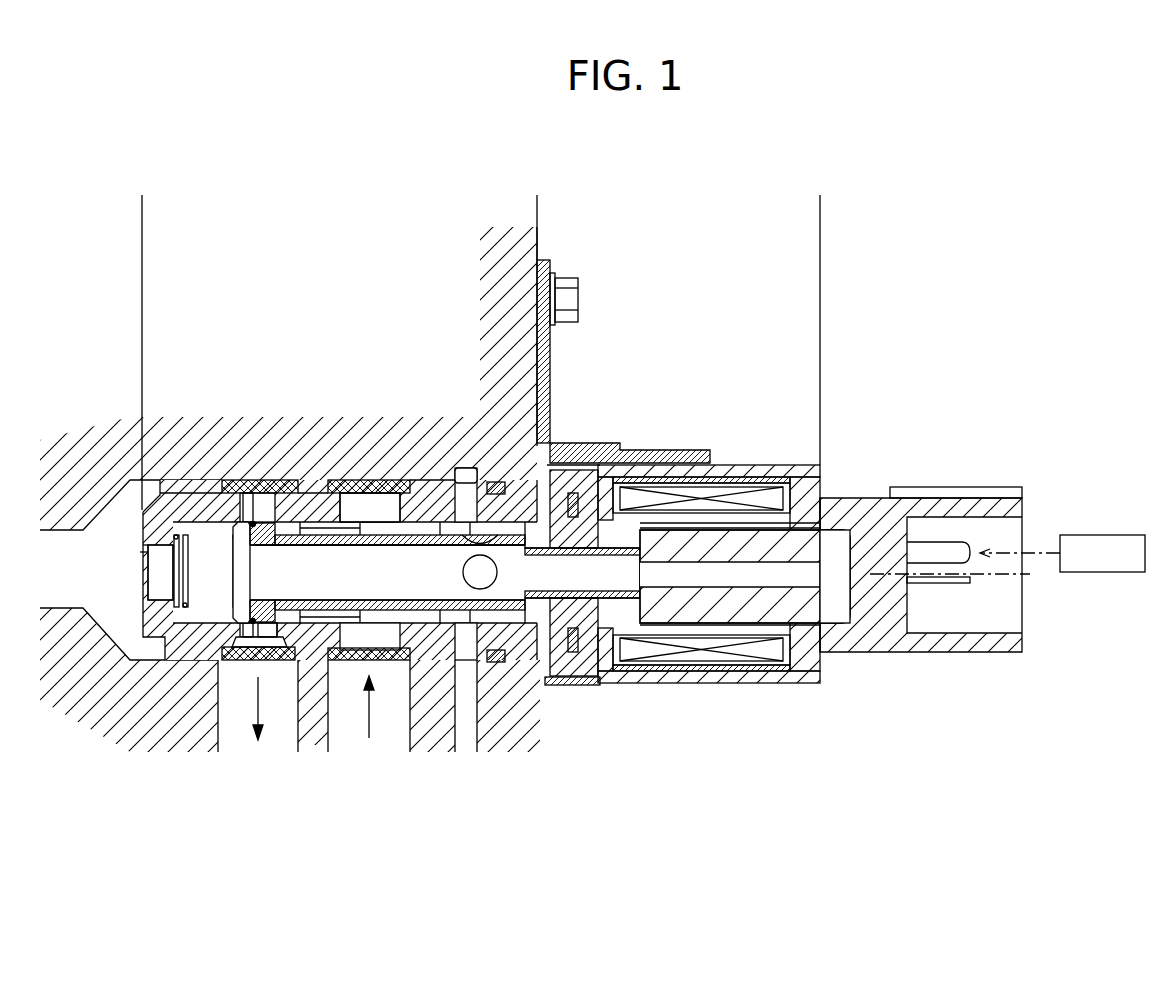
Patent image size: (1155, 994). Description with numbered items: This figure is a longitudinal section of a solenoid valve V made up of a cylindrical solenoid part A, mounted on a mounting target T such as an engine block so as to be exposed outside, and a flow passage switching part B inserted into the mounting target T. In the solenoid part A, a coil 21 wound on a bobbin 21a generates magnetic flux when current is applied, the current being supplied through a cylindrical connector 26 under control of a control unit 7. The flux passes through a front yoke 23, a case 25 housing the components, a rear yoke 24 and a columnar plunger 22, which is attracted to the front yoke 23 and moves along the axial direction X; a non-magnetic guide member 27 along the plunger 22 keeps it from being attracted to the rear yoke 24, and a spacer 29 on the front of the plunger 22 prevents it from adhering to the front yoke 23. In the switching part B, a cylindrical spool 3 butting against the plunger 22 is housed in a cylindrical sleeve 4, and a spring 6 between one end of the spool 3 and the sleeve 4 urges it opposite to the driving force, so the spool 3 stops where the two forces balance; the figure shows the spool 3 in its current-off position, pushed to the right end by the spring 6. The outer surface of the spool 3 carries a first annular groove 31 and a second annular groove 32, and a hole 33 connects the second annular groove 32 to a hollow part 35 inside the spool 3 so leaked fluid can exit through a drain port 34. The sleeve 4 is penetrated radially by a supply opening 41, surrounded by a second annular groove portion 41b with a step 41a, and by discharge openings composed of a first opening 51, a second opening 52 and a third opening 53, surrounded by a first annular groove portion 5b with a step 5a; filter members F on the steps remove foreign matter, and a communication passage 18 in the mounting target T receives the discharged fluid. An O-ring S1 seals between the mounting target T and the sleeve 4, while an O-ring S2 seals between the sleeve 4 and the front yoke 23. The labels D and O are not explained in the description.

The spool 3 is at (425, 613).
The sleeve 4 is at (150, 480).
The step 5a is at (205, 485).
The first annular groove portion 5b is at (255, 493).
The spring 6 is at (160, 583).
The control unit 7 is at (1085, 535).
The communication passage 18 is at (280, 733).
The coil 21 is at (755, 497).
The bobbin 21a is at (730, 510).
The plunger 22 is at (755, 613).
The front yoke 23 is at (587, 676).
The rear yoke 24 is at (820, 480).
The case 25 is at (703, 688).
The connector 26 is at (962, 487).
The guide member 27 is at (833, 522).
The spacer 29 is at (628, 628).
The first annular groove 31 is at (355, 528).
The second annular groove 32 is at (468, 545).
The hole 33 is at (498, 572).
The drain port 34 is at (150, 552).
The hollow part 35 is at (349, 589).
The supply opening 41 is at (355, 640).
The step 41a is at (428, 500).
The second annular groove portion 41b is at (368, 505).
The first opening 51 is at (248, 633).
The second opening 52 is at (267, 630).
The third opening 53 is at (240, 480).
The O-ring S1 is at (492, 482).
The O-ring S2 is at (573, 480).
The diameter D is at (212, 524).
The filter member F is at (326, 490).
The center O is at (582, 574).
The mounting target T is at (517, 323).
The solenoid valve V is at (937, 278).
The axial direction X is at (960, 582).
The solenoid part A is at (537, 205).
The flow passage switching part B is at (142, 205).